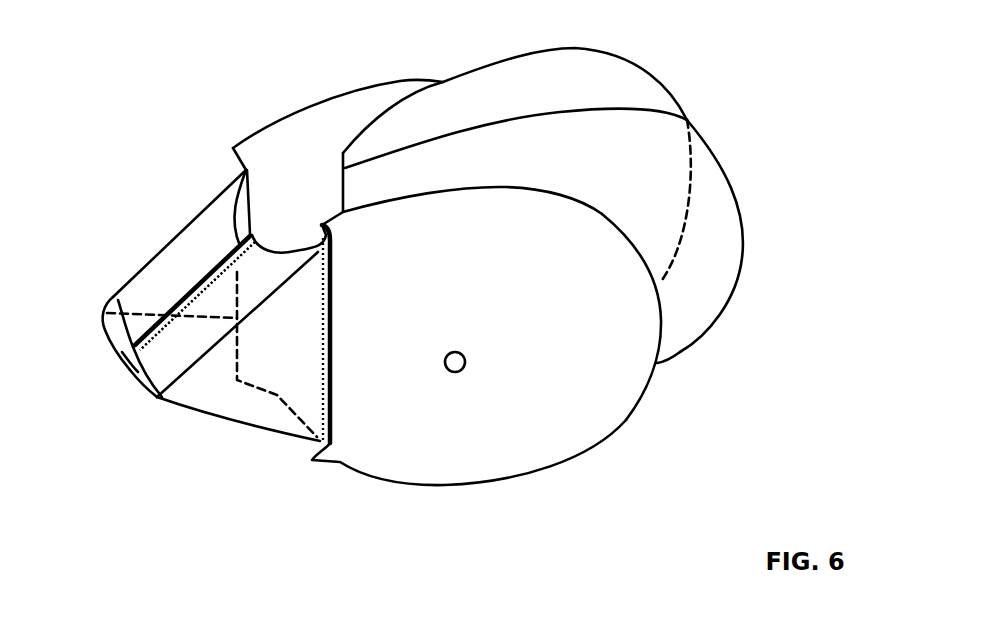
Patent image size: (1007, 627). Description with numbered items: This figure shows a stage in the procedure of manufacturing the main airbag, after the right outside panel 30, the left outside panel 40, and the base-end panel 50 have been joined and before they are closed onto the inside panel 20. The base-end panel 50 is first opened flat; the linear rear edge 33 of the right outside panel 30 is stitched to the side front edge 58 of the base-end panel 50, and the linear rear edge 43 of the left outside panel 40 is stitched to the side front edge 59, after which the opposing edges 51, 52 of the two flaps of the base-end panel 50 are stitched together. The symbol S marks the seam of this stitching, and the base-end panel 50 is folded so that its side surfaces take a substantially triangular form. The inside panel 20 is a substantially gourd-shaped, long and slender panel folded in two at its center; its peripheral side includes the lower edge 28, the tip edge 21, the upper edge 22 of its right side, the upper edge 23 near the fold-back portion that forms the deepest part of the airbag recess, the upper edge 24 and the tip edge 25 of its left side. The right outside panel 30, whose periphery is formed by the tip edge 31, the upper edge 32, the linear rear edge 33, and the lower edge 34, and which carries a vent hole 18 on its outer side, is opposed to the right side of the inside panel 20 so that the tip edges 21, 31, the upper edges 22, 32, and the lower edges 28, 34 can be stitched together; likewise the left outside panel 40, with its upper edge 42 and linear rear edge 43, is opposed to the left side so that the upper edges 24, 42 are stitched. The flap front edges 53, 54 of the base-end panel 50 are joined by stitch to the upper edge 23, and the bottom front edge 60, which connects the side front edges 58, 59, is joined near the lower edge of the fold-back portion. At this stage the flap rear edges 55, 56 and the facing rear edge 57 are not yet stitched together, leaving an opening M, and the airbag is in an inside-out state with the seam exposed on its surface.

The vent hole 18 is at (465, 362).
The inside panel 20 is at (587, 193).
The tip edge 21 is at (745, 232).
The upper edge 22 is at (541, 112).
The upper edge 23 is at (515, 139).
The upper edge 24 is at (515, 56).
The tip edge 25 is at (690, 115).
The lower edge 28 is at (662, 365).
The right outside panel 30 is at (491, 363).
The tip edge 31 is at (660, 318).
The upper edge 32 is at (494, 188).
The linear rear edge 33 is at (338, 322).
The lower edge 34 is at (400, 487).
The left outside panel 40 is at (307, 135).
The upper edge 42 is at (301, 108).
The linear rear edge 43 is at (234, 152).
The base-end panel 50 is at (194, 342).
The opposing edge 51 is at (215, 270).
The opposing edge 52 is at (238, 278).
The flap front edge 53 is at (295, 250).
The flap front edge 54 is at (253, 205).
The flap rear edge 55 is at (175, 385).
The flap rear edge 56 is at (120, 302).
The rear edge 57 is at (125, 388).
The side front edge 58 is at (322, 315).
The side front edge 59 is at (240, 172).
The bottom front edge 60 is at (285, 399).
The seam S is at (163, 323).
The opening M is at (120, 362).